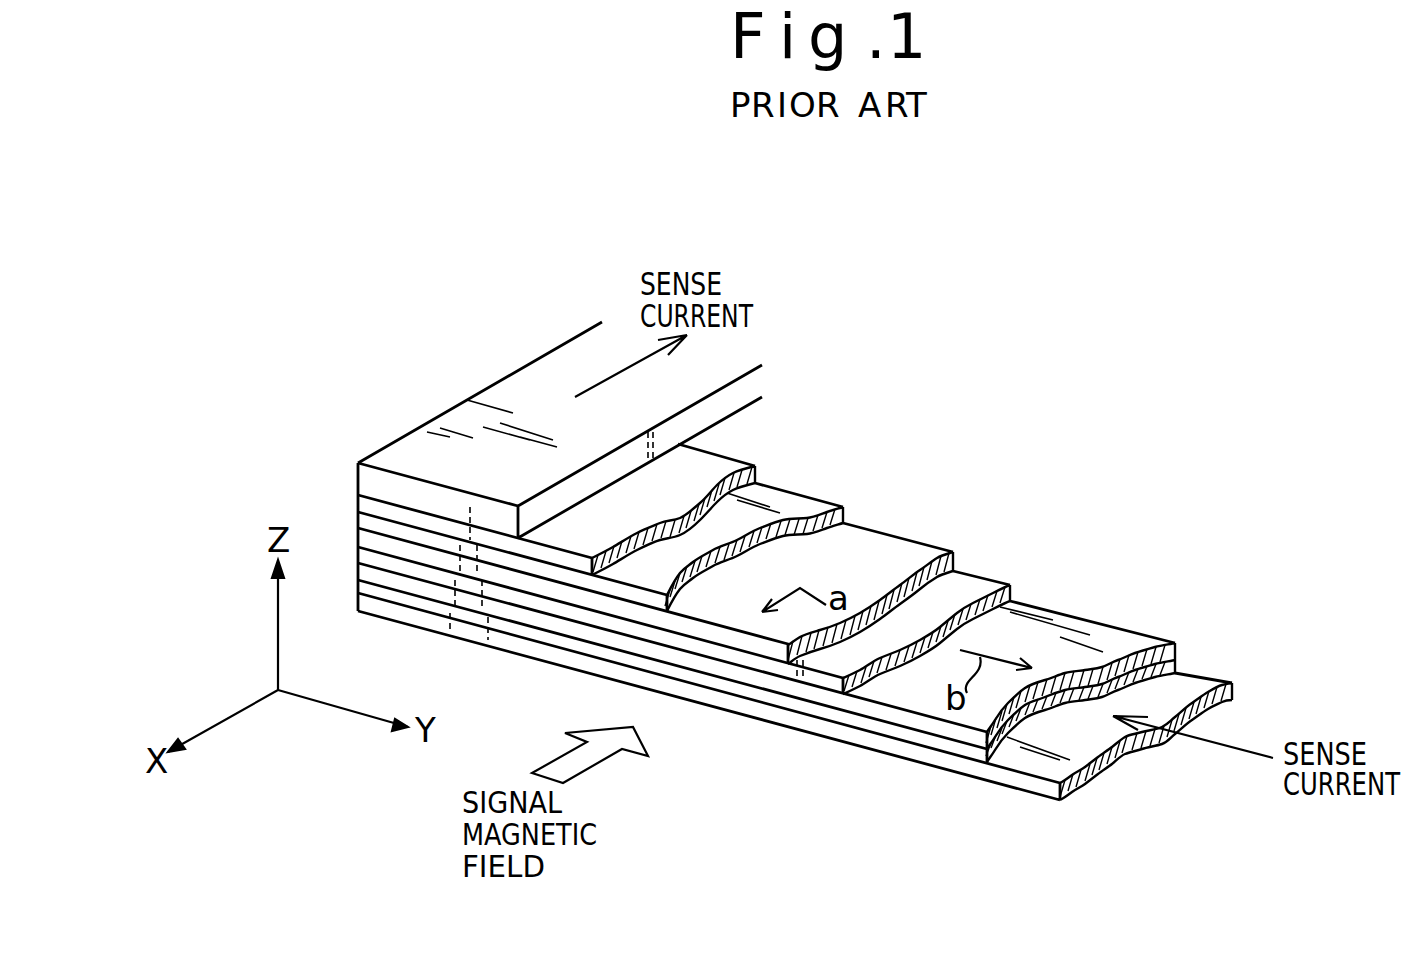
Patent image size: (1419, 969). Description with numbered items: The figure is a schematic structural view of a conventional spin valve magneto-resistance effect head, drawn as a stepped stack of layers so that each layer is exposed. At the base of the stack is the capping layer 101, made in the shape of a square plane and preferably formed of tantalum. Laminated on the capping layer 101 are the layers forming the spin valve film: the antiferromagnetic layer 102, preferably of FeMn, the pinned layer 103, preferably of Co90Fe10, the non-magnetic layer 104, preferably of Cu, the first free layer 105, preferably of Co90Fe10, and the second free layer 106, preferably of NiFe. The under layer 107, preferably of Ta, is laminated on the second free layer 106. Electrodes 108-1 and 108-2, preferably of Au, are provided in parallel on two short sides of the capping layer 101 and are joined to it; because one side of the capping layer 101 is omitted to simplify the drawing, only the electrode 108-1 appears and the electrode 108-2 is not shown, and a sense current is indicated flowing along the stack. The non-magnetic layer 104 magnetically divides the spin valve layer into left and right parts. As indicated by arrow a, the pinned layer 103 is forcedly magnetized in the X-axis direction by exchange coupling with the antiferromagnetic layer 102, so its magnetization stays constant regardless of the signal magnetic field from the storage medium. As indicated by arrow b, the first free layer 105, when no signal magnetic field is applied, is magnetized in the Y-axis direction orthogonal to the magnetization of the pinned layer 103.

The capping layer 101 is at (707, 470).
The antiferromagnetic layer 102 is at (787, 503).
The pinned layer 103 is at (890, 560).
The non-magnetic layer 104 is at (973, 582).
The first free layer 105 is at (1100, 637).
The second free layer 106 is at (1140, 660).
The under layer 107 is at (1193, 690).
The electrode 108-1 is at (507, 397).
The electrode 108-2 is at (575, 483).